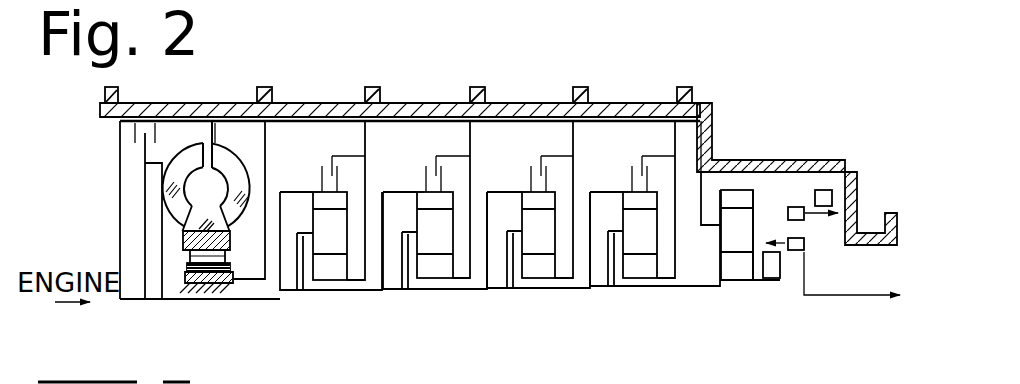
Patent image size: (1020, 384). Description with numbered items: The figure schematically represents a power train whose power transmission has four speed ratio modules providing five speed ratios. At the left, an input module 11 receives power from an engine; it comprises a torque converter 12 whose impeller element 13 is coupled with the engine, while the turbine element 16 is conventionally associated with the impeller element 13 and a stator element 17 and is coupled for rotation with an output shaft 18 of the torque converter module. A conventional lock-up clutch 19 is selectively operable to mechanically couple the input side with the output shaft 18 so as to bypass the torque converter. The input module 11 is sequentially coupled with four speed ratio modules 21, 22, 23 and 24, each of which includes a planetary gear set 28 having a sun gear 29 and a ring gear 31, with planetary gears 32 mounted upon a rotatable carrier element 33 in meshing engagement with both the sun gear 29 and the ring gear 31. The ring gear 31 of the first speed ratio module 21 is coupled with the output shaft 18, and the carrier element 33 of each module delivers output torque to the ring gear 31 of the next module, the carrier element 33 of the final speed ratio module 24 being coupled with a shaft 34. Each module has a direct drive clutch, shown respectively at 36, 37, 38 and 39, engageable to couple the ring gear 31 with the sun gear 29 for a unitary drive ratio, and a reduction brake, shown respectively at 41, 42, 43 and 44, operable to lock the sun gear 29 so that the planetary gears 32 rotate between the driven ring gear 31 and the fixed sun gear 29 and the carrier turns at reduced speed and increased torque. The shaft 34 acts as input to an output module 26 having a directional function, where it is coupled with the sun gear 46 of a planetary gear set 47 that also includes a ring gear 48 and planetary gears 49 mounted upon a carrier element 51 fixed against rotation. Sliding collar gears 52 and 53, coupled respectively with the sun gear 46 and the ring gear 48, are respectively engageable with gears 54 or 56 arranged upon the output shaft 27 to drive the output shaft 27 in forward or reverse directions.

The input module 11 is at (180, 101).
The torque converter 12 is at (158, 213).
The impeller element 13 is at (231, 172).
The turbine element 16 is at (176, 205).
The stator element 17 is at (192, 243).
The output shaft 18 is at (178, 299).
The lock-up clutch 19 is at (135, 142).
The first speed ratio module 21 is at (301, 101).
The second speed ratio module 22 is at (404, 101).
The third speed ratio module 23 is at (509, 101).
The fourth speed ratio module 24 is at (613, 101).
The output module 26 is at (823, 157).
The output shaft 27 is at (862, 296).
The planetary gear set 28 is at (360, 294).
The sun gear 29 is at (330, 262).
The ring gear 31 is at (306, 290).
The planetary gears 32 is at (318, 300).
The carrier element 33 is at (292, 262).
The shaft 34 is at (705, 285).
The direct drive clutch 36 is at (311, 189).
The direct drive clutch 37 is at (424, 190).
The direct drive clutch 38 is at (529, 190).
The direct drive clutch 39 is at (631, 190).
The reduction brake 41 is at (359, 126).
The reduction brake 42 is at (464, 126).
The reduction brake 43 is at (569, 126).
The reduction brake 44 is at (671, 126).
The sun gear 46 is at (727, 284).
The planetary gear set 47 is at (752, 283).
The ring gear 48 is at (731, 197).
The planetary gears 49 is at (749, 222).
The carrier element 51 is at (713, 230).
The sliding collar gear 52 is at (772, 280).
The sliding collar gear 53 is at (831, 198).
The gear 54 is at (796, 251).
The gear 56 is at (797, 210).